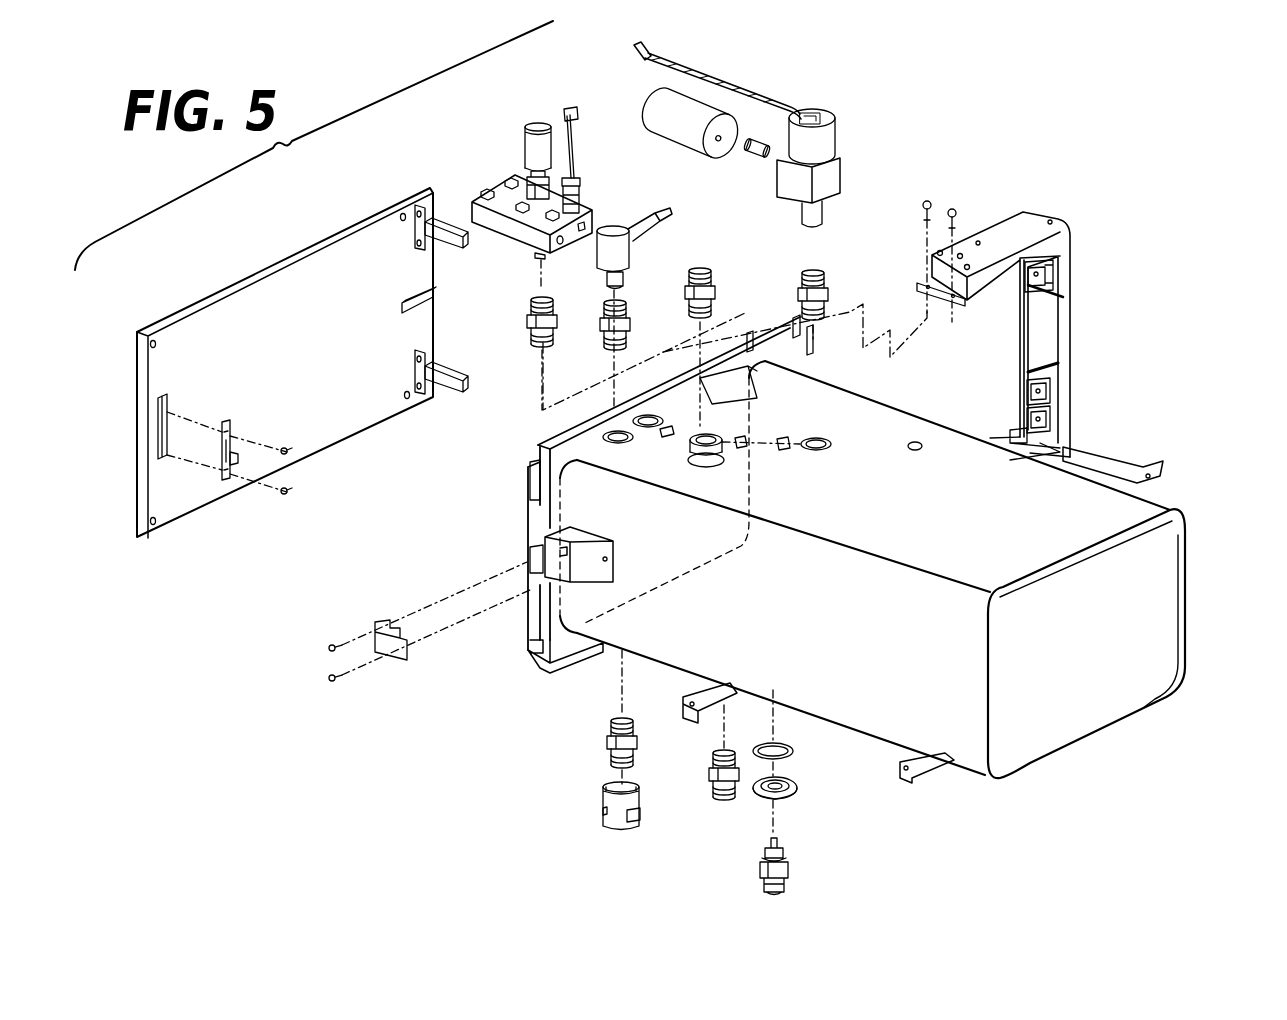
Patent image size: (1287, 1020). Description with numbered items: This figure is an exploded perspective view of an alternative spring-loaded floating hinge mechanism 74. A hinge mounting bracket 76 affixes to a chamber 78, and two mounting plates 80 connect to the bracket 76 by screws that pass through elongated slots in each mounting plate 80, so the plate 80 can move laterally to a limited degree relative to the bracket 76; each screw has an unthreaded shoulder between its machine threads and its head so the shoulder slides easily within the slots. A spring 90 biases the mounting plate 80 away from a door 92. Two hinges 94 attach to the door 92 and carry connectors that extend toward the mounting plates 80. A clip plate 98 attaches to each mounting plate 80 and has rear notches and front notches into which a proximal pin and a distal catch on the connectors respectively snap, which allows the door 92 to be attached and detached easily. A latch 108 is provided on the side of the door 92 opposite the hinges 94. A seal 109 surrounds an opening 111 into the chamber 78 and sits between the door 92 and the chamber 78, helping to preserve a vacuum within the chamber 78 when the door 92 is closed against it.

The hinge mechanism 74 is at (1172, 410).
The hinge mounting bracket 76 is at (1060, 322).
The chamber 78 is at (1160, 608).
The mounting plate 80 is at (1042, 370).
The spring 90 is at (1057, 382).
The door 92 is at (333, 258).
The hinge 94 is at (446, 220).
The clip plate 98 is at (1028, 400).
The latch 108 is at (229, 421).
The seal 109 is at (526, 512).
The opening 111 is at (585, 614).